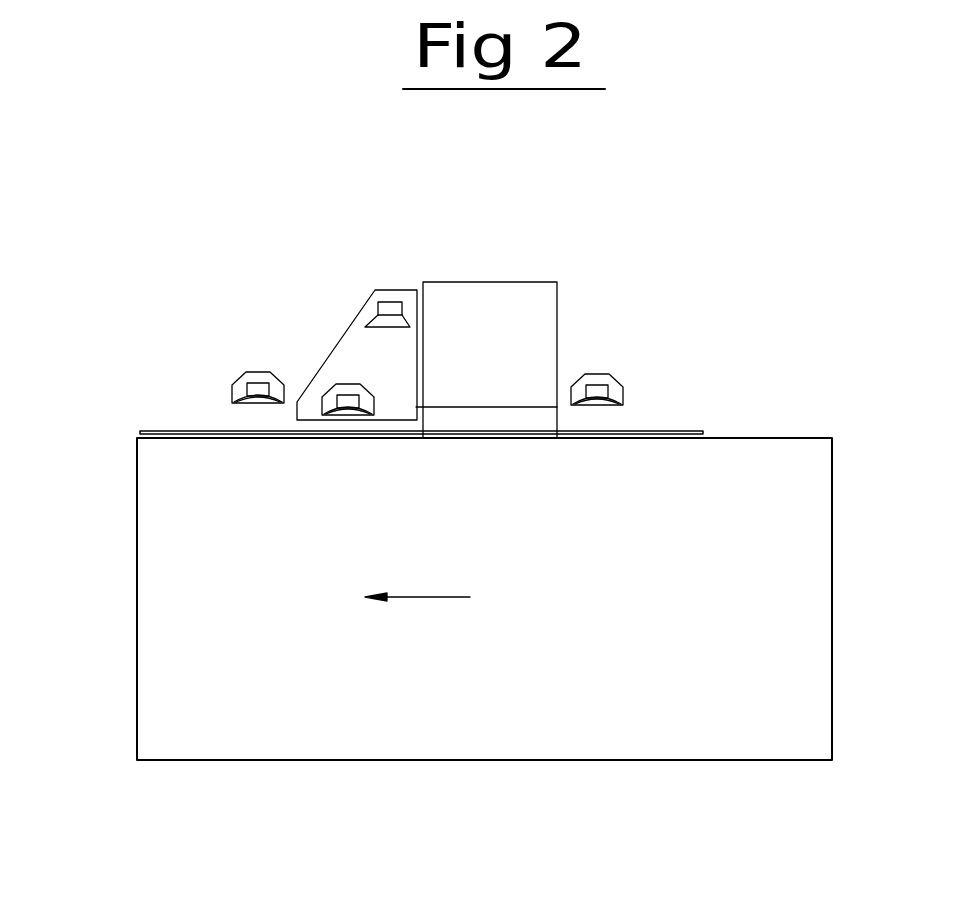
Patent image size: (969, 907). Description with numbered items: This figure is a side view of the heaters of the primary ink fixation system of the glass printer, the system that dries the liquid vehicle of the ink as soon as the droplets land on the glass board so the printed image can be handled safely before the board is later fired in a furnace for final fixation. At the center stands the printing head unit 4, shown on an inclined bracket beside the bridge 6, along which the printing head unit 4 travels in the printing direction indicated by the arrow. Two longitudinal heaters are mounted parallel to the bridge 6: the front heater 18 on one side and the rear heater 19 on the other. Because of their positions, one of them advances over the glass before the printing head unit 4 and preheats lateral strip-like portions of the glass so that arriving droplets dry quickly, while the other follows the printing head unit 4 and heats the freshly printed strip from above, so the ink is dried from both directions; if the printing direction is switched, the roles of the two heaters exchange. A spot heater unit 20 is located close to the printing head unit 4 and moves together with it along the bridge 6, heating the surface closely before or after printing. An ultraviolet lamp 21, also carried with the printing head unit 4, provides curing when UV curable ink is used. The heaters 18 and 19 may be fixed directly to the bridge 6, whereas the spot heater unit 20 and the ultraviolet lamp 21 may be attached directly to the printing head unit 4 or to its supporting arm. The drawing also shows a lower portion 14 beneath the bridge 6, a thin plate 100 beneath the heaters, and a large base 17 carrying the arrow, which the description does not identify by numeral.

The printing head unit 4 is at (408, 295).
The bridge 6 is at (535, 310).
The base plate 14 is at (535, 417).
The stage 17 is at (192, 665).
The front heater 18 is at (243, 383).
The rear heater 19 is at (593, 373).
The spot heater unit 20 is at (340, 397).
The ultraviolet lamp 21 is at (387, 303).
The substrate plate 100 is at (147, 432).